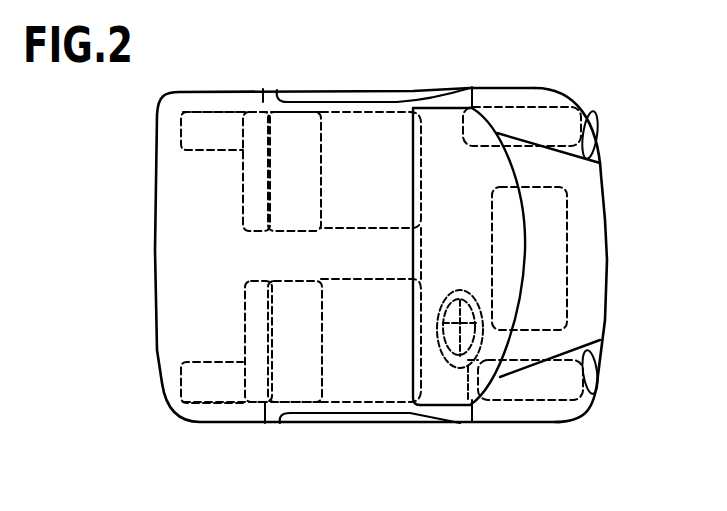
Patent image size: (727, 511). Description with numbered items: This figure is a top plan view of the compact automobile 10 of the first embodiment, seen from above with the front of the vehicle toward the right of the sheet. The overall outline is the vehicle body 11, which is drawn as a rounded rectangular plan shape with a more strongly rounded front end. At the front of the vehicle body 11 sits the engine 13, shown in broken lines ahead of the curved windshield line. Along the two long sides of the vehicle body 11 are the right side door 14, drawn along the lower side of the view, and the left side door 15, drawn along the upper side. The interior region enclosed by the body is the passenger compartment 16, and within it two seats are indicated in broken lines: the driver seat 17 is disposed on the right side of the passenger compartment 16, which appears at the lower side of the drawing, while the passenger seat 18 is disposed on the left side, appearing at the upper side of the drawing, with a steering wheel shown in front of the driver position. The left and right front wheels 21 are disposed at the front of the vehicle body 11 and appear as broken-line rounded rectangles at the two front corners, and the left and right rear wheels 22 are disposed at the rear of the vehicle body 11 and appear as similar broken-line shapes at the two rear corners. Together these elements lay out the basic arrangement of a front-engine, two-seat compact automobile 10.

The compact automobile 10 is at (611, 99).
The vehicle body 11 is at (587, 193).
The engine 13 is at (552, 258).
The right side door 14 is at (411, 418).
The left side door 15 is at (405, 93).
The passenger compartment 16 is at (270, 252).
The driver seat 17 is at (342, 400).
The passenger seat 18 is at (333, 123).
The front wheels 21 is at (527, 115).
The rear wheels 22 is at (210, 117).